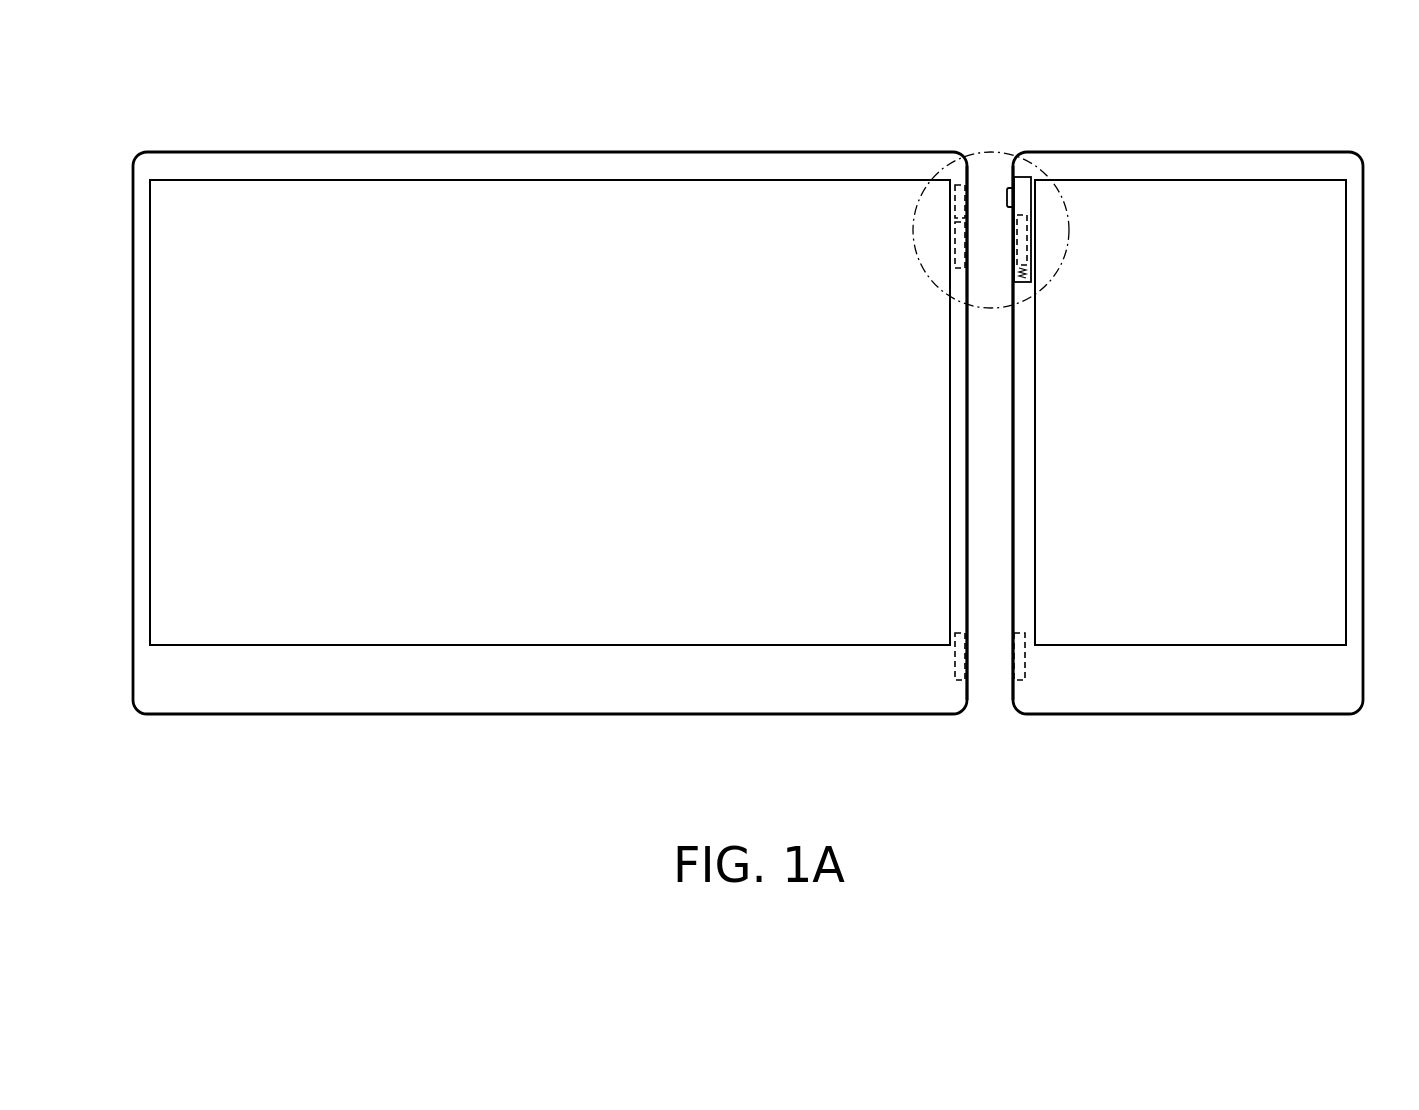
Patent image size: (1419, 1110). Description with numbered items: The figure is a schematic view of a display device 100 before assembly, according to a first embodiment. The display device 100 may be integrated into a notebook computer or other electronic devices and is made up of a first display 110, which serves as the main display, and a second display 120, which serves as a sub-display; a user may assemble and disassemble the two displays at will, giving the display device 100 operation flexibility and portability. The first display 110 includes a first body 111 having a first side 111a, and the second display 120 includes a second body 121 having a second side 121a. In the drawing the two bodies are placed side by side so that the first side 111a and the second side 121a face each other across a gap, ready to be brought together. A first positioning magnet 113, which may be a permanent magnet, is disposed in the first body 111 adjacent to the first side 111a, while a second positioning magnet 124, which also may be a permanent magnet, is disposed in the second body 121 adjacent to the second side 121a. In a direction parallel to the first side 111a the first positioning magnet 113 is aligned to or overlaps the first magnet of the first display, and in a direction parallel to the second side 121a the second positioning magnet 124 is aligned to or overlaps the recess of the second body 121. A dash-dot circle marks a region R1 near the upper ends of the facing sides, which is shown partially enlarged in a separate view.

The display device 100 is at (1403, 796).
The first display 110 is at (783, 136).
The first body 111 is at (878, 160).
The first side 111a is at (967, 575).
The first positioning magnet 113 is at (958, 683).
The second display 120 is at (1235, 136).
The second body 121 is at (1162, 160).
The second side 121a is at (1014, 603).
The second positioning magnet 124 is at (1019, 683).
The region R1 is at (985, 150).